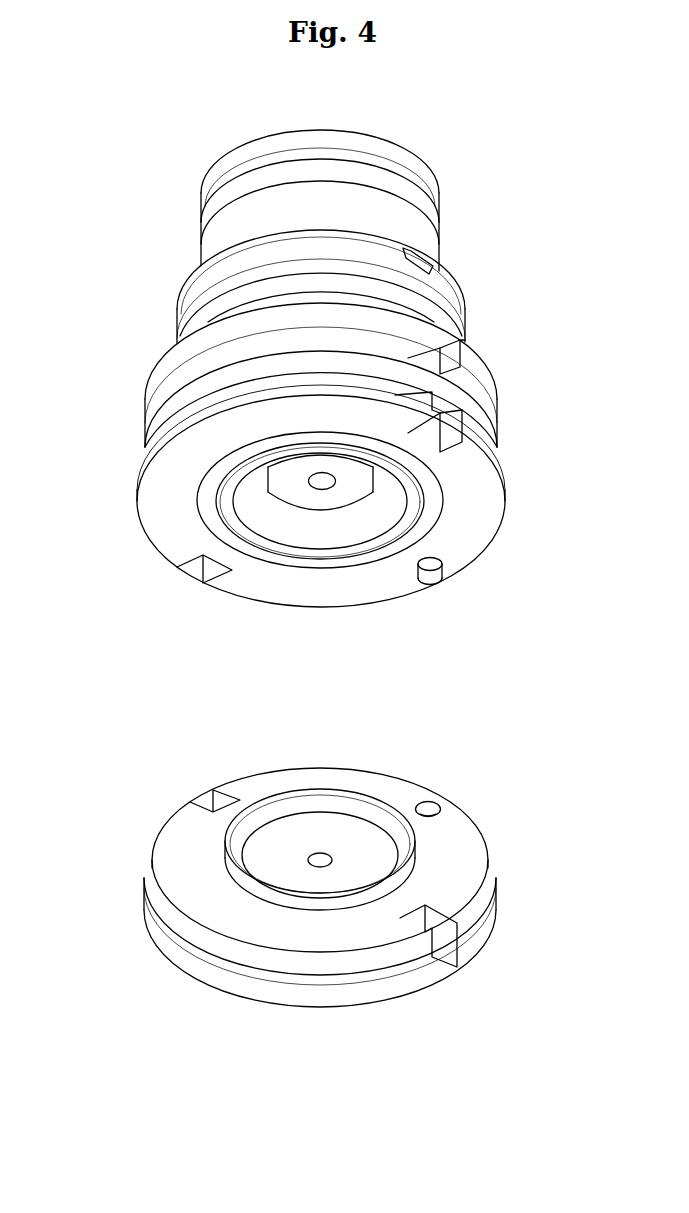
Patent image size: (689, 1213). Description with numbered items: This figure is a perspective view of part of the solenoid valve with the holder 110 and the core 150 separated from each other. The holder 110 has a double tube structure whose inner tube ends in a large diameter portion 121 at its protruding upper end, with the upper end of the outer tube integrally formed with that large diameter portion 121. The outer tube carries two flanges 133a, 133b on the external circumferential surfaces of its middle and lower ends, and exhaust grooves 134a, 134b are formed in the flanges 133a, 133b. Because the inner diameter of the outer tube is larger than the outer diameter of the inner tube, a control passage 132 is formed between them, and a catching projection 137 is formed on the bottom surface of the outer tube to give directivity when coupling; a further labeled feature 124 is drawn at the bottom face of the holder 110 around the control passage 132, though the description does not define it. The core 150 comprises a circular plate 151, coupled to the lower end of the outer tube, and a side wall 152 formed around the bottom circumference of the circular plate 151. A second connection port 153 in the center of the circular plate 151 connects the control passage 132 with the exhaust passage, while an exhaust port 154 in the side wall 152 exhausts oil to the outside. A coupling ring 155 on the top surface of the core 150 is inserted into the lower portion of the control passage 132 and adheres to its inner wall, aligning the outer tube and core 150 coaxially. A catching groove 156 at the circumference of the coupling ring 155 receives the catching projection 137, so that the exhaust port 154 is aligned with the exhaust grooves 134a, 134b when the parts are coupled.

The holder 110 is at (236, 157).
The large diameter portion 121 is at (425, 249).
The flange 133a is at (190, 298).
The exhaust groove 134a is at (450, 358).
The exhaust groove 134b is at (455, 427).
The flange 133b is at (155, 455).
The central hole 124 is at (326, 489).
The control passage 132 is at (344, 532).
The catching projection 137 is at (430, 585).
The core 150 is at (160, 836).
The circular plate 151 is at (458, 838).
The side wall 152 is at (490, 935).
The second connection port 153 is at (316, 854).
The exhaust port 154 is at (440, 965).
The coupling ring 155 is at (345, 790).
The catching groove 156 is at (435, 805).